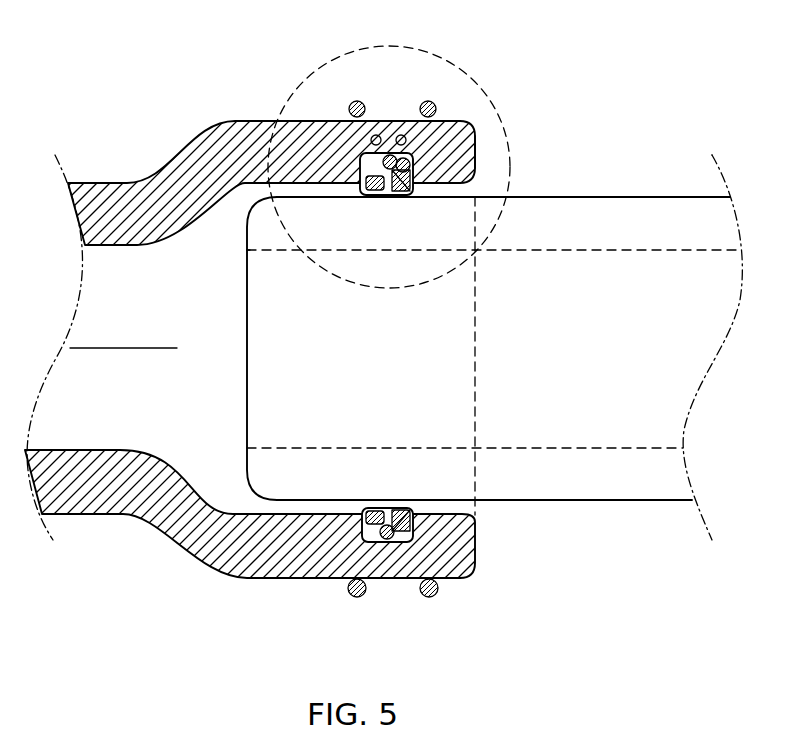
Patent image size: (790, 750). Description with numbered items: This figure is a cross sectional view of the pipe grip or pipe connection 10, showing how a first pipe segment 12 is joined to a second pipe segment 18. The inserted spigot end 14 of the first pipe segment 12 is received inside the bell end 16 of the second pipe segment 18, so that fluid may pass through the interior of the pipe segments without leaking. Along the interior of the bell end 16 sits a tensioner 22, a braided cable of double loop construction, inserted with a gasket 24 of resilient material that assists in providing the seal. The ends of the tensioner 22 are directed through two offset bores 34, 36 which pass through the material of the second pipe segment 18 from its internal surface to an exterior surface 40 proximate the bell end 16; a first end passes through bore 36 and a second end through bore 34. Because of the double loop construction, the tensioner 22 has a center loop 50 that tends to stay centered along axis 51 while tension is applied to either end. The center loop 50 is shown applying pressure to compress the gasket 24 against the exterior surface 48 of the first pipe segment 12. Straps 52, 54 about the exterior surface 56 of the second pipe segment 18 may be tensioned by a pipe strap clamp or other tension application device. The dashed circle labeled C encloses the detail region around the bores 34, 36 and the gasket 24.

The pipe connection 10 is at (594, 121).
The first pipe segment 12 is at (557, 478).
The spigot end 14 is at (227, 318).
The bell end 16 is at (481, 162).
The second pipe segment 18 is at (125, 164).
The tensioner 22 is at (387, 539).
The gasket 24 is at (398, 517).
The bore 34 is at (403, 134).
The bore 36 is at (375, 134).
The exterior surface 40 is at (400, 118).
The exterior surface 48 is at (653, 197).
The center loop 50 is at (390, 168).
The axis 51 is at (115, 348).
The strap 52 is at (437, 99).
The strap 54 is at (346, 110).
The exterior surface 56 is at (199, 132).
The detail circle C is at (500, 122).